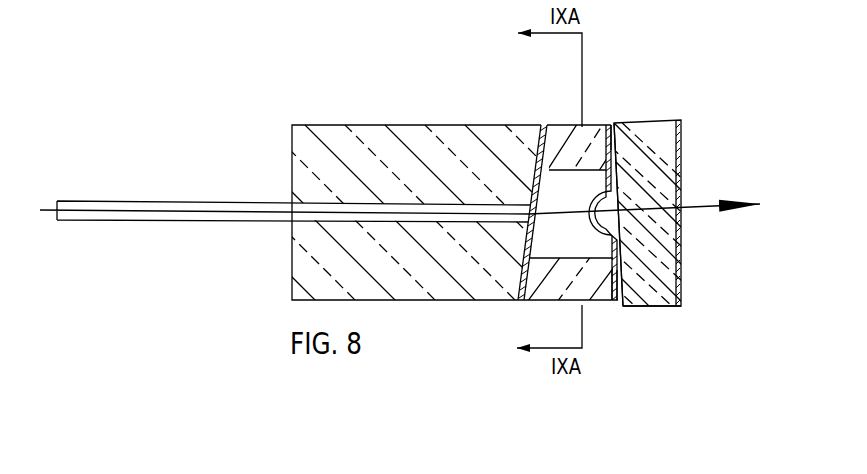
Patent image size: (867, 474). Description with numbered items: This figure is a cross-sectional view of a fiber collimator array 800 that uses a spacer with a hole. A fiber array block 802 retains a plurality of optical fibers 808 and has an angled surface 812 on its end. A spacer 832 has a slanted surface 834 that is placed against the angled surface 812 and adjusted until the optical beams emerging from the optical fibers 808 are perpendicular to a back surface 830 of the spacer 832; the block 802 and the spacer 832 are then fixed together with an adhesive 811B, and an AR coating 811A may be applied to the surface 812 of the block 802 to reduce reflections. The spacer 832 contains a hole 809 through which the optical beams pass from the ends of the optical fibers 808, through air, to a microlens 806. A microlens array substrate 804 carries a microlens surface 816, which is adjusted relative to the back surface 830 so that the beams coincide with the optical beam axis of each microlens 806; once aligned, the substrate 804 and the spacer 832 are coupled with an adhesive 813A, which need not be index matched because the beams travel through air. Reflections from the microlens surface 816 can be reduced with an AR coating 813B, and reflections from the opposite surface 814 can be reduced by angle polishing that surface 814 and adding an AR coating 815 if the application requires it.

The fiber collimator array 800 is at (192, 143).
The fiber array block 802 is at (327, 125).
The microlens array substrate 804 is at (640, 122).
The microlens 806 is at (618, 198).
The optical fibers 808 is at (165, 222).
The hole 809 is at (590, 238).
The AR coating 811A is at (537, 162).
The adhesive 811B is at (548, 160).
The angled surface 812 is at (523, 290).
The adhesive 813A is at (610, 305).
The AR coating 813B is at (615, 304).
The surface 814 is at (667, 305).
The AR coating 815 is at (678, 120).
The microlens surface 816 is at (606, 125).
The back surface 830 is at (622, 272).
The spacer 832 is at (587, 127).
The slanted surface 834 is at (535, 160).